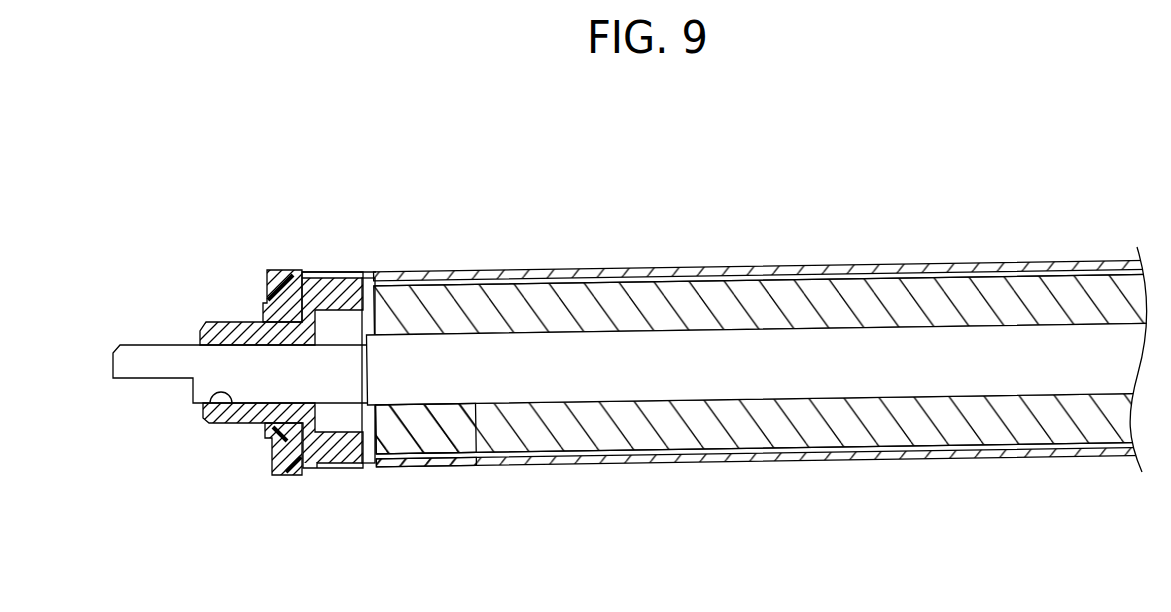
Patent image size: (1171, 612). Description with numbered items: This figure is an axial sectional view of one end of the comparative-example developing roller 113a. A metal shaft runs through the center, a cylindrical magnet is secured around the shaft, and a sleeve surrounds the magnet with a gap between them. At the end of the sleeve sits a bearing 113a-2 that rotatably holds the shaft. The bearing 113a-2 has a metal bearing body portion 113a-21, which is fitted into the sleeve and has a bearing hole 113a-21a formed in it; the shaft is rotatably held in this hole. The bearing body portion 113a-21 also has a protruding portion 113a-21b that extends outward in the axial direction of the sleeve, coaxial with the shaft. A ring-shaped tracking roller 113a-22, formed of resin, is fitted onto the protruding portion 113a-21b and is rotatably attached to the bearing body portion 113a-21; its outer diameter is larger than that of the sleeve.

The developing roller 113a is at (685, 226).
The bearing 113a-2 is at (420, 537).
The bearing body portion 113a-21 is at (339, 451).
The bearing hole 113a-21a is at (203, 407).
The protruding portion 113a-21b is at (228, 321).
The tracking roller 113a-22 is at (286, 469).